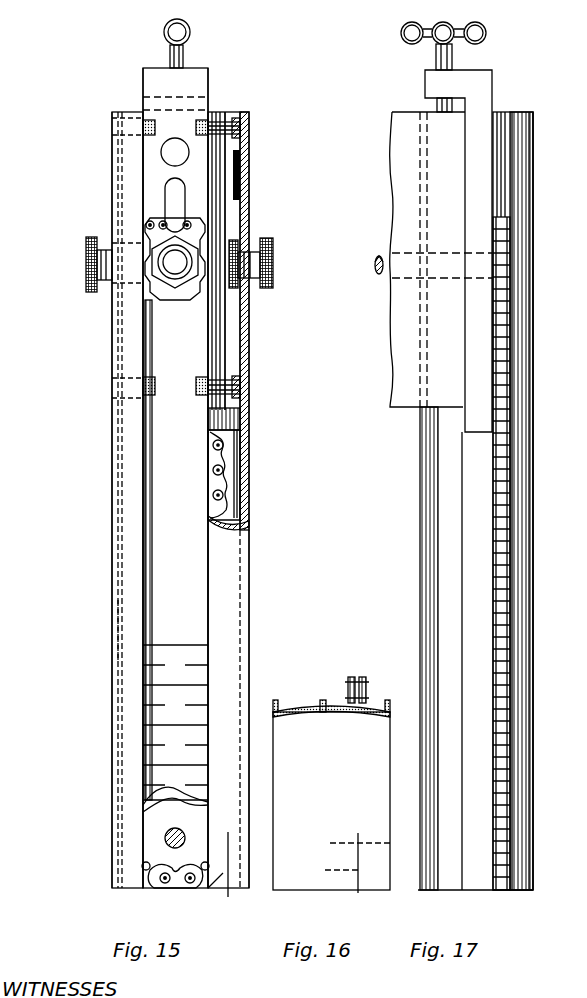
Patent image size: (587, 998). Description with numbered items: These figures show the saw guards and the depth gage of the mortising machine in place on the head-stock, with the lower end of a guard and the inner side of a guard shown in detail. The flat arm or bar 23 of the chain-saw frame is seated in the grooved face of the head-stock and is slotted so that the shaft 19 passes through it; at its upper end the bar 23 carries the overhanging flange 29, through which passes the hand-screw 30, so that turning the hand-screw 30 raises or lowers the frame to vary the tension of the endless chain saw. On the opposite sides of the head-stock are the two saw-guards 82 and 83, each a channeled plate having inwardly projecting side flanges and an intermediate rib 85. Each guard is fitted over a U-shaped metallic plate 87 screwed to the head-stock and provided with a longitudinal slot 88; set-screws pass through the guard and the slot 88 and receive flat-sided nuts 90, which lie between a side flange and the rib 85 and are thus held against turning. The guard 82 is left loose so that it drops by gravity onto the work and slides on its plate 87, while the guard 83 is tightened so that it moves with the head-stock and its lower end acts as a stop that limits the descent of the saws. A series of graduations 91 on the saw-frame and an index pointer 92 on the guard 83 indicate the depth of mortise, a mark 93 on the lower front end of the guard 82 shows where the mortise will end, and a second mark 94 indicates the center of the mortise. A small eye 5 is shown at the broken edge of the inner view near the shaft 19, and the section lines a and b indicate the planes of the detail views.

In FIG. 17, the eye 5 is at (383, 258).
In FIG. 15, the shaft 19 is at (168, 271).
In FIG. 17, the shaft 19 is at (378, 268).
In FIG. 15, the flat arm or bar 23 is at (150, 182).
In FIG. 17, the flat arm or bar 23 is at (480, 122).
In FIG. 17, the laterally-projecting or overhanging flange 29 is at (425, 90).
In FIG. 17, the hand-screw 30 is at (486, 33).
In FIG. 15, the saw-guard 82 is at (249, 555).
In FIG. 15, the saw-guard 83 is at (112, 560).
In FIG. 16, the saw-guard 83 is at (331, 783).
In FIG. 17, the intermediate rib 85 is at (462, 606).
In FIG. 15, the metallic plate 87 is at (225, 342).
In FIG. 17, the metallic plate 87 is at (540, 225).
In FIG. 15, the longitudinal slot 88 is at (240, 308).
In FIG. 15, the nut 90 is at (233, 244).
In FIG. 17, the nut 90 is at (536, 300).
In FIG. 15, the graduations 91 is at (175, 722).
In FIG. 15, the index mark or pointer 92 is at (143, 800).
In FIG. 15, the mark 93 is at (193, 886).
In FIG. 16, the mark 94 is at (356, 865).
In FIG. 15, the section line a is at (225, 875).
In FIG. 16, the section line b is at (362, 876).